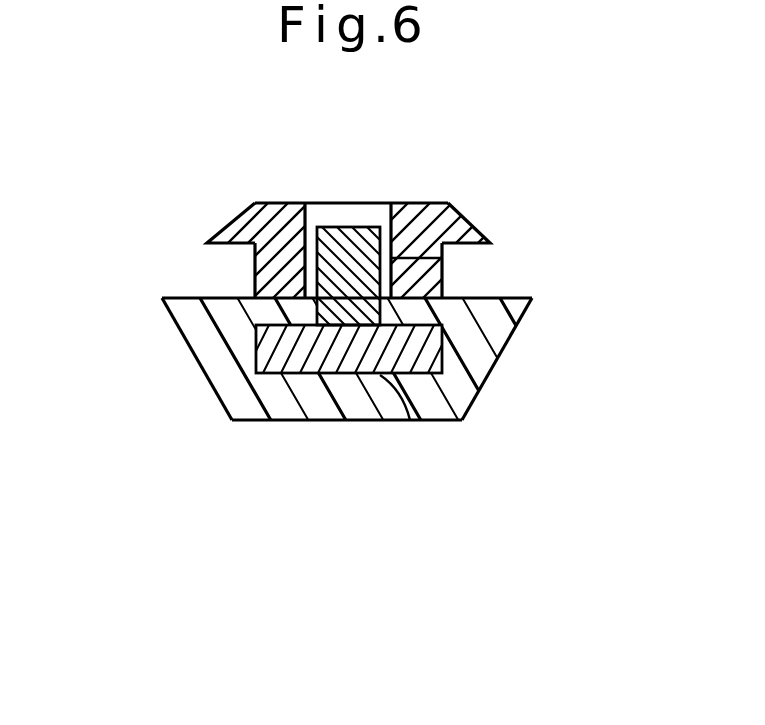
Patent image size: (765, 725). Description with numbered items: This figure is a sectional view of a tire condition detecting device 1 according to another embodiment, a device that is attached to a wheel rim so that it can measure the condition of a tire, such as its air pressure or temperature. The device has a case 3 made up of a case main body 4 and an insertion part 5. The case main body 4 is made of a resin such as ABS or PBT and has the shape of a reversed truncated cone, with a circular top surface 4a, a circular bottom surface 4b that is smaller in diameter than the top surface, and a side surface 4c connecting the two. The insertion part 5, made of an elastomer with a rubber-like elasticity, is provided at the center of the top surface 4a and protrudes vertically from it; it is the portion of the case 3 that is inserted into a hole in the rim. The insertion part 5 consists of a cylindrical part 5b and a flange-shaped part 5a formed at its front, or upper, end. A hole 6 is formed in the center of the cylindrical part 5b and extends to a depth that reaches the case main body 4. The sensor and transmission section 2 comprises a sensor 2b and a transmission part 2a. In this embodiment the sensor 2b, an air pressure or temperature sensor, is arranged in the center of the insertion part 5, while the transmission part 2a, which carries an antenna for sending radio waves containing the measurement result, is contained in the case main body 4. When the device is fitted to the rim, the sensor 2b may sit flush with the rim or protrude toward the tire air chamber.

The tire condition detecting device 1 is at (234, 194).
The sensor and transmission section 2 is at (464, 419).
The transmission part 2a is at (408, 420).
The sensor 2b is at (443, 262).
The case 3 is at (533, 299).
The case main body 4 is at (197, 358).
The top surface 4a is at (485, 298).
The bottom surface 4b is at (335, 420).
The side surface 4c is at (496, 362).
The insertion part 5 is at (210, 256).
The flange-shaped part 5a is at (230, 230).
The cylindrical part 5b is at (274, 265).
The hole 6 is at (382, 227).